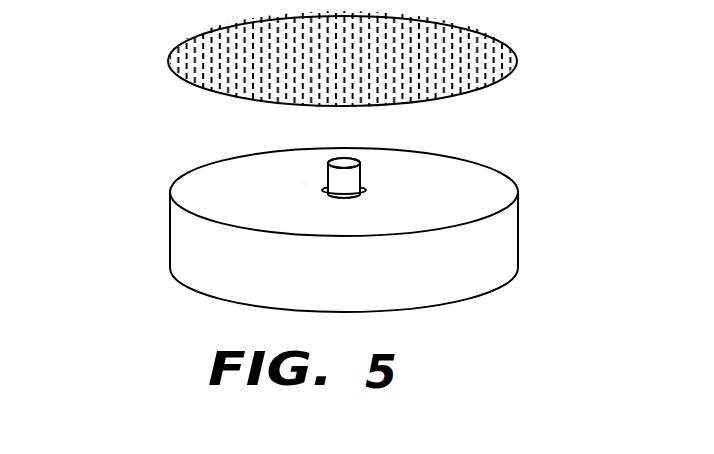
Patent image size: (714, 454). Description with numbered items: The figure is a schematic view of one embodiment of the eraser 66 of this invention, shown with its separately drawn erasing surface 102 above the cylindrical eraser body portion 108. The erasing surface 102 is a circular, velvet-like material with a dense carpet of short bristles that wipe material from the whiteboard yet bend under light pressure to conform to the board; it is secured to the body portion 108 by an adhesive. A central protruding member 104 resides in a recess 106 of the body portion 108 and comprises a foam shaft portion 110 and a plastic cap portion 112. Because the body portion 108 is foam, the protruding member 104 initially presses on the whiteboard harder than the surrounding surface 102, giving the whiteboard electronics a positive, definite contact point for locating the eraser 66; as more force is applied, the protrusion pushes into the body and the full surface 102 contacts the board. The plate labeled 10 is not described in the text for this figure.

The perforated plate 10 is at (513, 52).
The eraser 66 is at (615, 152).
The erasing surface 102 is at (198, 192).
The protruding member 104 is at (305, 184).
The recess 106 is at (366, 189).
The eraser body portion 108 is at (468, 246).
The shaft portion 110 is at (352, 181).
The cap portion 112 is at (350, 162).